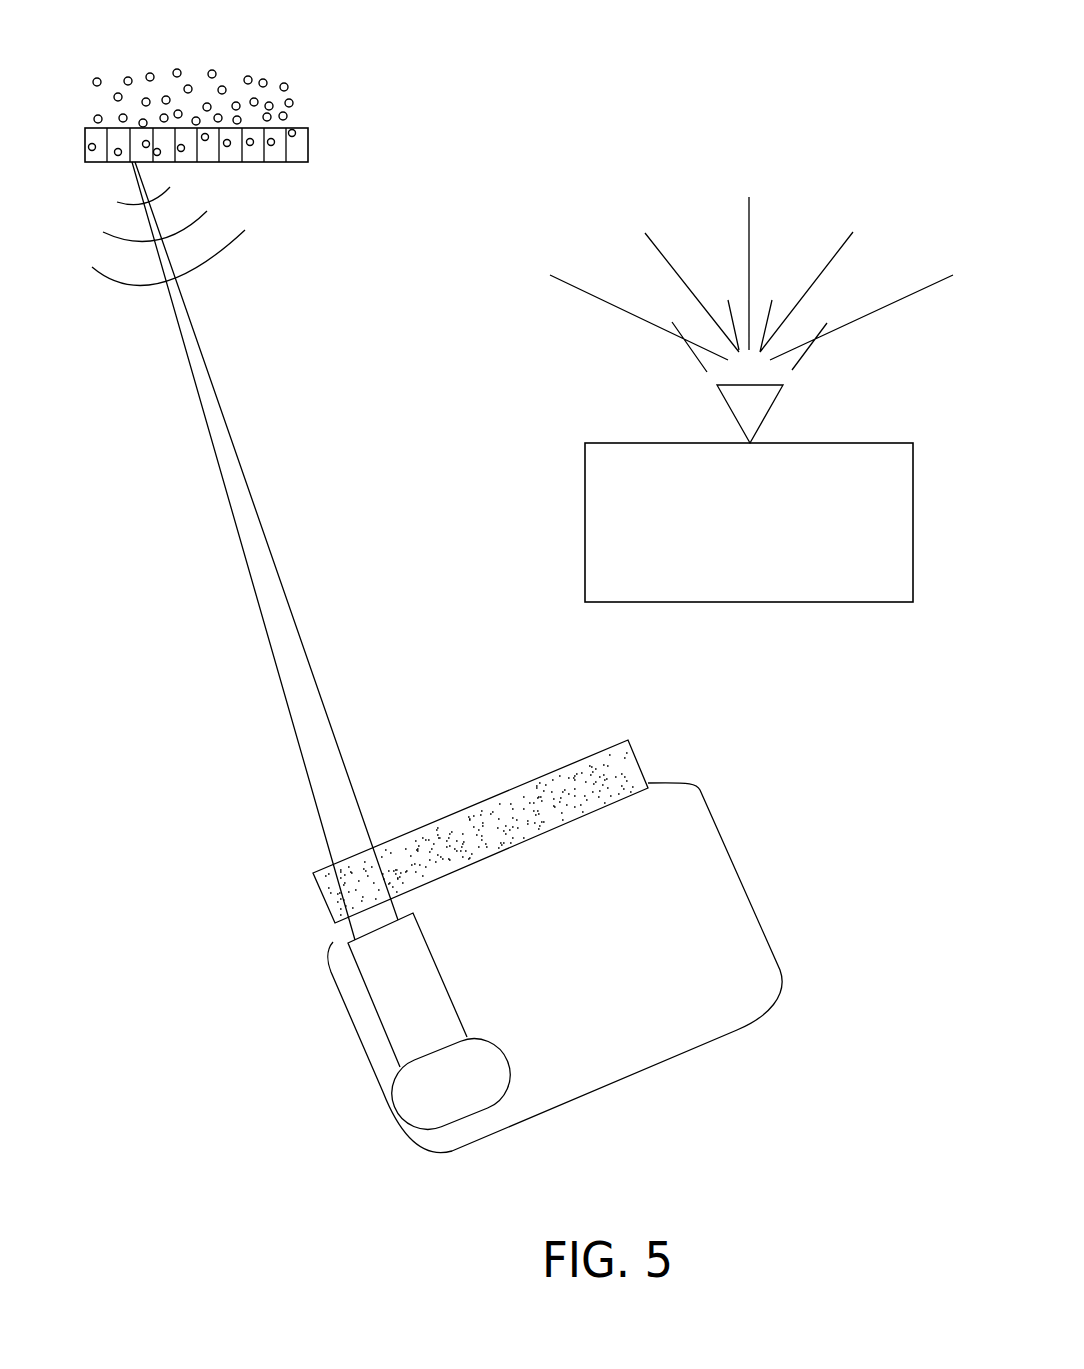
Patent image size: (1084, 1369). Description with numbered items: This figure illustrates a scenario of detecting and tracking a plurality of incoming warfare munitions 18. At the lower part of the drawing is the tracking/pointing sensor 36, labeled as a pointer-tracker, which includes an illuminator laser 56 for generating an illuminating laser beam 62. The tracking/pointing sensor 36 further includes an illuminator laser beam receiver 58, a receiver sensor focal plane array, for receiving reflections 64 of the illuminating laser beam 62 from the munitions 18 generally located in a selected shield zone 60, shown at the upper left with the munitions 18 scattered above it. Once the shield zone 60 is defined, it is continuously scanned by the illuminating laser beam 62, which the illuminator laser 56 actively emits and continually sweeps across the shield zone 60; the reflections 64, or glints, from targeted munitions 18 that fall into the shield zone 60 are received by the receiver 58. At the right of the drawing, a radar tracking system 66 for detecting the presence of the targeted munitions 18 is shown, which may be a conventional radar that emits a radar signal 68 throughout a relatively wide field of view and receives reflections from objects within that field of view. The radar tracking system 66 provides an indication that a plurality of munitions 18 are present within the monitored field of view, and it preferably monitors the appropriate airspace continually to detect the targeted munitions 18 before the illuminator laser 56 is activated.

The munitions 18 is at (179, 70).
The tracking/pointing sensor 36 is at (737, 1032).
The illuminator laser 56 is at (388, 1008).
The illuminator laser beam receiver 58 is at (452, 808).
The shield zone 60 is at (308, 143).
The illuminating laser beam 62 is at (262, 525).
The reflections 64 is at (223, 255).
The radar tracking system 66 is at (752, 603).
The radar signal 68 is at (748, 240).